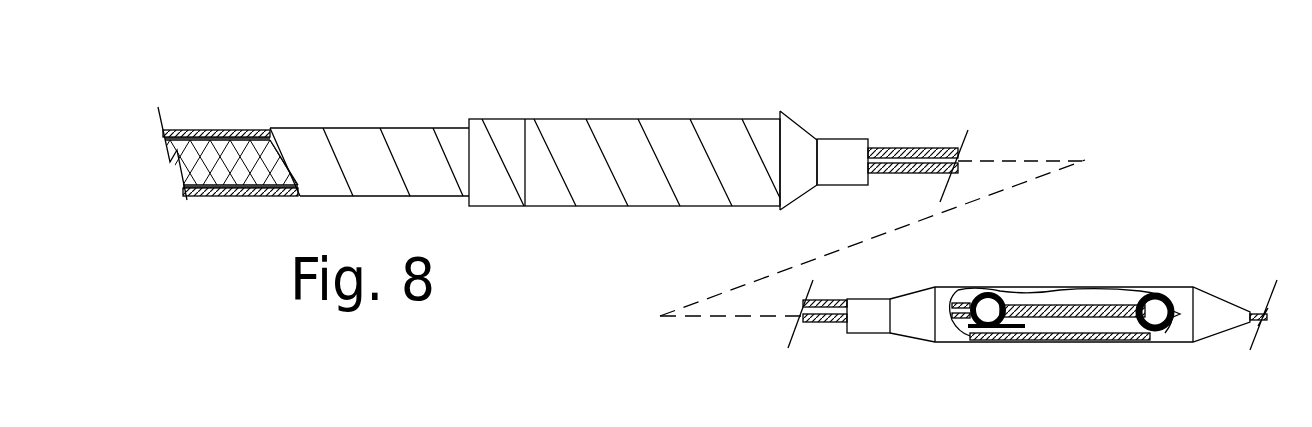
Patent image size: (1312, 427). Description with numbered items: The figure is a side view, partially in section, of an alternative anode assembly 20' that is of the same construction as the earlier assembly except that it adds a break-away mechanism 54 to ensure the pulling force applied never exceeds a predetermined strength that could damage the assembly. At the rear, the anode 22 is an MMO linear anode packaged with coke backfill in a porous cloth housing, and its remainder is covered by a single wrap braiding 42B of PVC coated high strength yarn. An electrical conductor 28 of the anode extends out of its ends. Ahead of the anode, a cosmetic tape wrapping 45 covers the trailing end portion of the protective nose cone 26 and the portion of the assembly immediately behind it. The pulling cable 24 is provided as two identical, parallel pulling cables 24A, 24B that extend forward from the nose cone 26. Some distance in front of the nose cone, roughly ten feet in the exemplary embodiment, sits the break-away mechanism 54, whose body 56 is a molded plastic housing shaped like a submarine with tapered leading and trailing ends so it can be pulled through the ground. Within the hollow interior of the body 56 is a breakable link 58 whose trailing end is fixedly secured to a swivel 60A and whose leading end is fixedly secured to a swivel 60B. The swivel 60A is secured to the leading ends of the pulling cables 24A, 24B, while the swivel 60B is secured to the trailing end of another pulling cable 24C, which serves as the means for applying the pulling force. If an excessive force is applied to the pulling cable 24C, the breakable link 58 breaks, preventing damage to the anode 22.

The anode assembly 20' is at (612, 220).
The anode 22 is at (247, 158).
The pulling cable 24 is at (883, 147).
The pulling cable 24A is at (200, 132).
The pulling cable 24B is at (202, 195).
The pulling cable 24C is at (1178, 310).
The protective nose cone 26 is at (802, 158).
The electrical conductor 28 is at (870, 177).
The single wrap braiding 42B is at (238, 172).
The tape wrapping 45 is at (623, 142).
The break-away mechanism 54 is at (1072, 282).
The body 56 is at (1085, 340).
The breakable link 58 is at (1068, 305).
The swivel 60A is at (987, 291).
The swivel 60B is at (1160, 331).